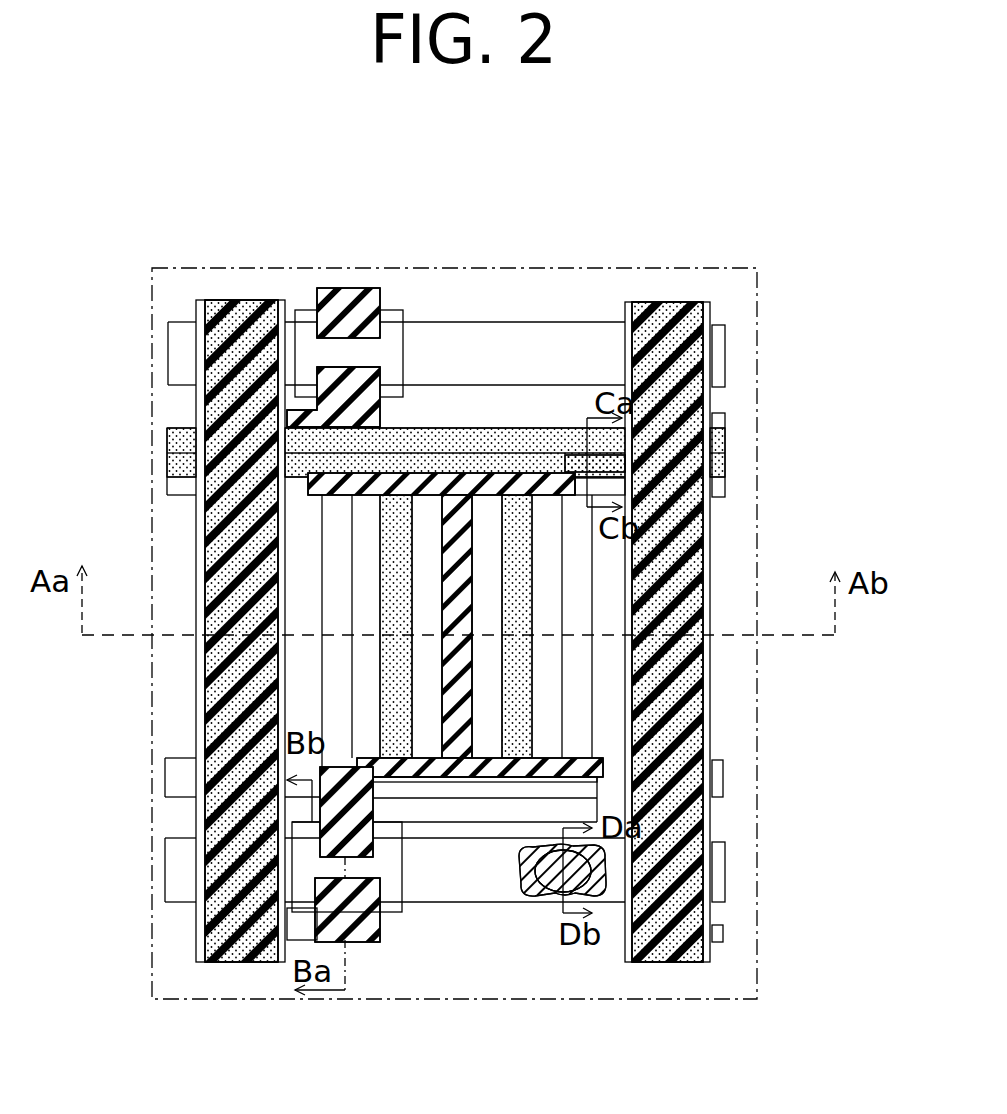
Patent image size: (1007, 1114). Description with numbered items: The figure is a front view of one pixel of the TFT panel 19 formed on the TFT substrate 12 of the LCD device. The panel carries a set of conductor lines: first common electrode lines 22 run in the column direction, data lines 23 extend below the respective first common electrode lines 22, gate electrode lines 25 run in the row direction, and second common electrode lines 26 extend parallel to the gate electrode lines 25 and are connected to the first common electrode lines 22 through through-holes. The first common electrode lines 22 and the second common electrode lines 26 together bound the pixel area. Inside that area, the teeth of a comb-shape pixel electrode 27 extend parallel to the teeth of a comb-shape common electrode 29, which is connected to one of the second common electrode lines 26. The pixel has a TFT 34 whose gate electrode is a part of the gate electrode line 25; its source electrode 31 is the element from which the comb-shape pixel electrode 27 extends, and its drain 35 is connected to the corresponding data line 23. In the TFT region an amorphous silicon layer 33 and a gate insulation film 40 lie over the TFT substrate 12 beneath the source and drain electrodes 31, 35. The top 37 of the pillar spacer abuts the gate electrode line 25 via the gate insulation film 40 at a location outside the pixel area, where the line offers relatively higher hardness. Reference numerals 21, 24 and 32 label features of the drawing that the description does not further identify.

The TFT panel 19 is at (697, 182).
The TFT substrate 12 is at (713, 268).
The gate electrode line 25 is at (727, 348).
The second common electrode line 26 is at (166, 441).
The first common electrode line 22 is at (196, 556).
The TFT 34 is at (398, 296).
The amorphous silicon layer 33 is at (393, 923).
The drain 35 is at (302, 925).
The comb-shape pixel electrode 27 is at (336, 586).
The comb-shape common electrode 29 is at (396, 690).
The data line 23 is at (200, 517).
The drain electrode bar 32 is at (603, 773).
The source electrode 31 is at (320, 852).
The gate electrode 24 is at (610, 464).
The thin film transistor 21 is at (758, 458).
The gate insulation film 40 is at (531, 887).
The top of the pillar spacer 37 is at (599, 893).